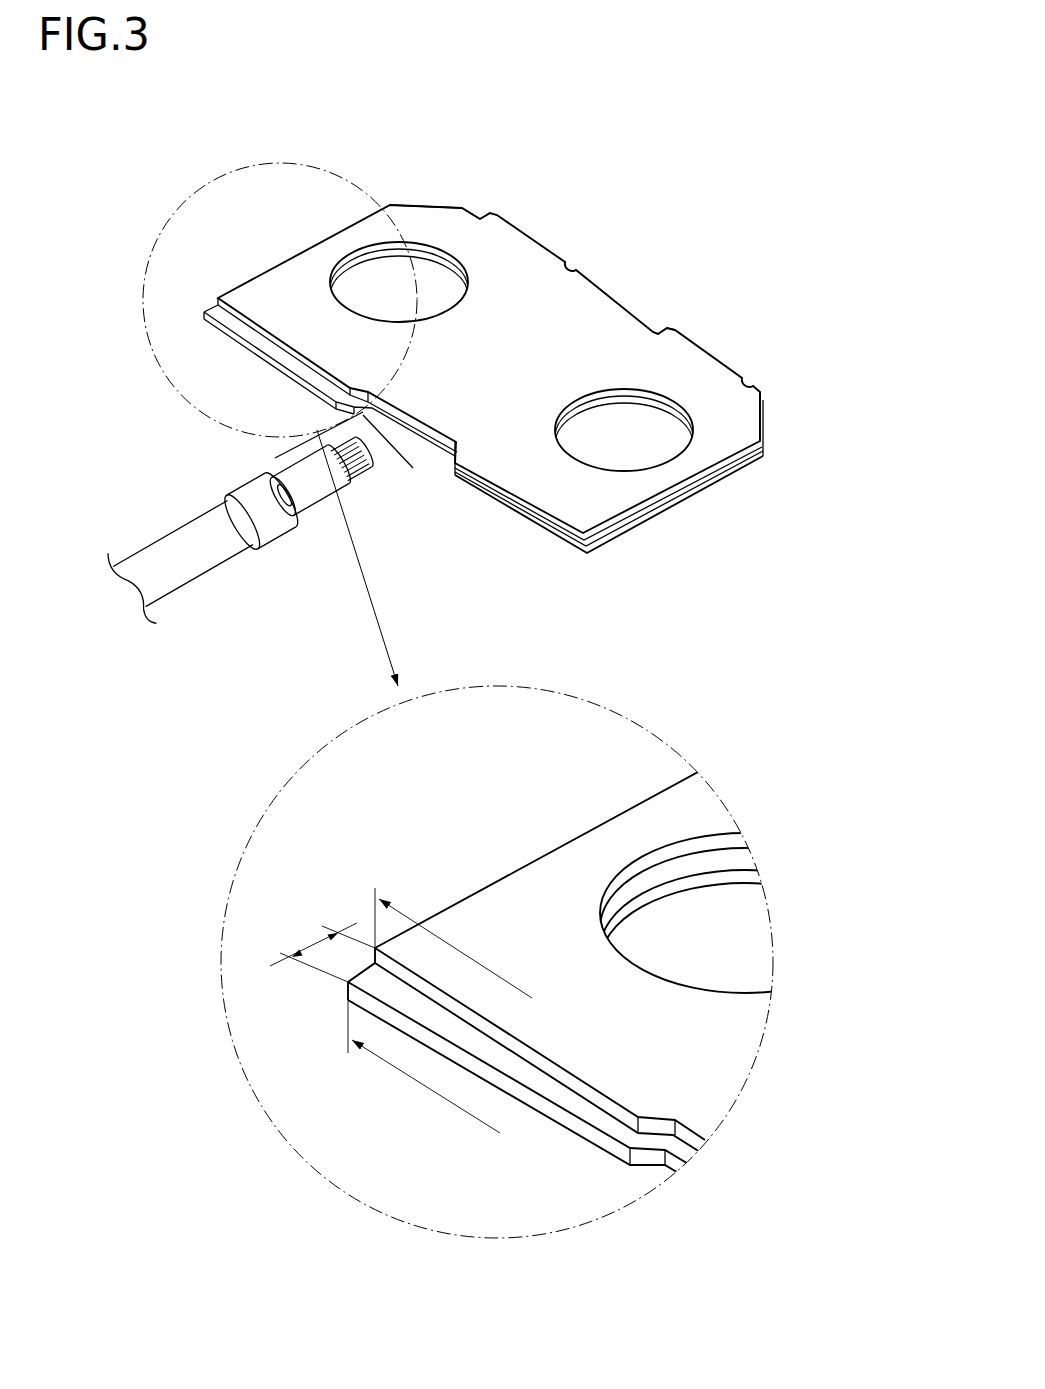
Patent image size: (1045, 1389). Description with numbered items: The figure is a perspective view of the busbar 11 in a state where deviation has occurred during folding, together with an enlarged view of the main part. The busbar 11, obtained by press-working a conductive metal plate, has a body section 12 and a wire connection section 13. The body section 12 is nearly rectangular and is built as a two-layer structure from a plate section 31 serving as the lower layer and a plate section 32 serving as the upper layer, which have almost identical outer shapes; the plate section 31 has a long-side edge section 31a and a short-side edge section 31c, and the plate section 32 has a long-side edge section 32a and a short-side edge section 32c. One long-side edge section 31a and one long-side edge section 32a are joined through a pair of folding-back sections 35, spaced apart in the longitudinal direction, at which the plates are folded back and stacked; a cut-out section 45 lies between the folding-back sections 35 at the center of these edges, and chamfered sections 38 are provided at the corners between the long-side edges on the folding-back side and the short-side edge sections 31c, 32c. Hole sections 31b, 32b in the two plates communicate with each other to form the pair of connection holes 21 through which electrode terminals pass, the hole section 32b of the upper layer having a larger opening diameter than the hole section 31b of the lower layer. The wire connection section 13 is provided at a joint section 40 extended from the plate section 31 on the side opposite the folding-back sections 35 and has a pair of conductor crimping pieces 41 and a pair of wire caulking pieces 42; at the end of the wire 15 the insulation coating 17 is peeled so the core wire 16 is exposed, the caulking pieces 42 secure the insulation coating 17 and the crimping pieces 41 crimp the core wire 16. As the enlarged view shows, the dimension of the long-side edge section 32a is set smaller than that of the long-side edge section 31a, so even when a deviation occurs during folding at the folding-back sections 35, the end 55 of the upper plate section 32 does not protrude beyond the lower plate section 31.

The busbar 11 is at (432, 160).
The body section 12 is at (586, 563).
The wire connection section 13 is at (301, 488).
The wire 15 is at (247, 522).
The core wire 16 is at (354, 458).
The insulation coating 17 is at (183, 558).
The connection hole 21 is at (400, 305).
The plate section 31 is at (228, 334).
The long-side edge section 31a is at (541, 530).
The hole section 31b is at (446, 296).
The short-side edge section 31c is at (635, 530).
The plate section 32 is at (305, 283).
The long-side edge section 32a is at (760, 396).
The hole section 32b is at (378, 270).
The short-side edge section 32c is at (275, 338).
The folding-back section 35 is at (490, 214).
The chamfered section 38 is at (408, 206).
The joint section 40 is at (407, 445).
The conductor crimping piece 41 is at (310, 480).
The wire caulking piece 42 is at (261, 511).
The cut-out section 45 is at (576, 290).
The end 55 is at (372, 960).